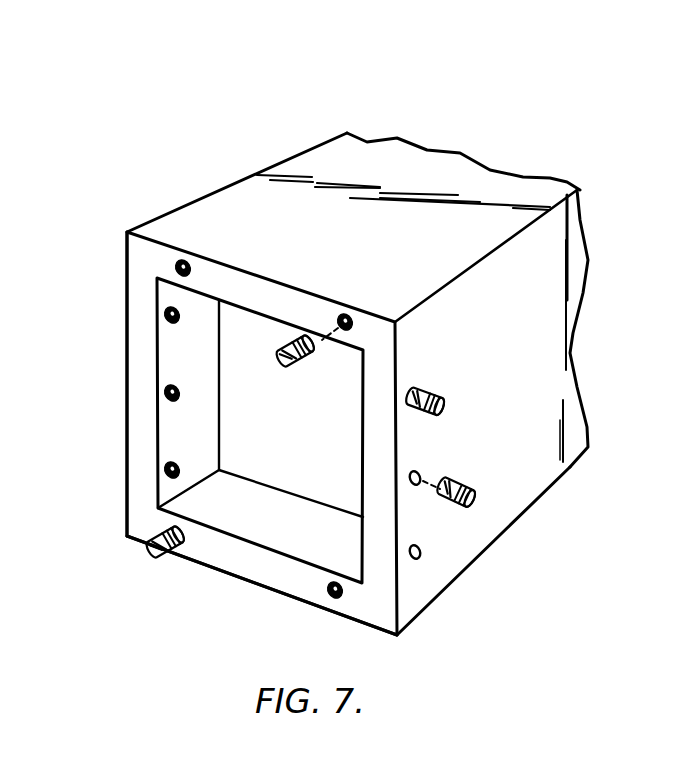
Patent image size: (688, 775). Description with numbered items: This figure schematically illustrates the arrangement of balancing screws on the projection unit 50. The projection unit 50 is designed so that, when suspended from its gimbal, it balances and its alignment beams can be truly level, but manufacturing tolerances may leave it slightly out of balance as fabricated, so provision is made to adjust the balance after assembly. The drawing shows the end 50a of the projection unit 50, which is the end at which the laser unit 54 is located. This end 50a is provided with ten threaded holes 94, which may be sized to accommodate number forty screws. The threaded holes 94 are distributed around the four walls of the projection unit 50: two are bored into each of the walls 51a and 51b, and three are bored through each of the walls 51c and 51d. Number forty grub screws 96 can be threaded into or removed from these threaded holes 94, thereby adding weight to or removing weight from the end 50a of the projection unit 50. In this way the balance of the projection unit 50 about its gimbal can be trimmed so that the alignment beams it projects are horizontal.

The projection unit 50 is at (391, 76).
The end of projection unit 50a is at (508, 560).
The wall 51a is at (332, 197).
The wall 51b is at (253, 583).
The wall 51c is at (492, 332).
The wall 51d is at (127, 329).
The laser unit 54 is at (336, 382).
The threaded holes 94 is at (180, 262).
The grub screws 96 is at (293, 333).